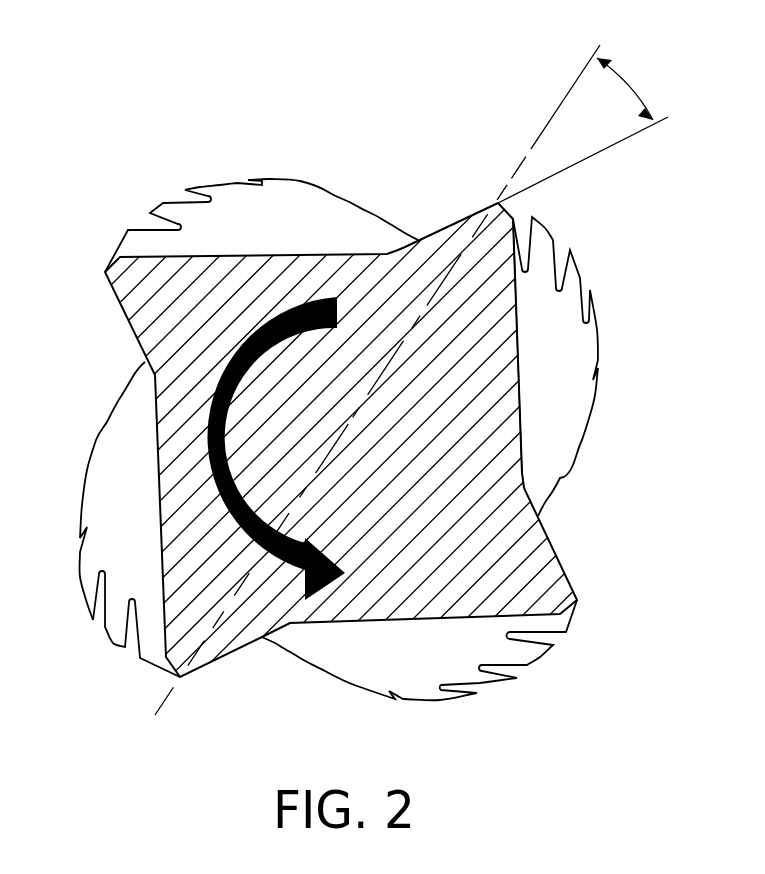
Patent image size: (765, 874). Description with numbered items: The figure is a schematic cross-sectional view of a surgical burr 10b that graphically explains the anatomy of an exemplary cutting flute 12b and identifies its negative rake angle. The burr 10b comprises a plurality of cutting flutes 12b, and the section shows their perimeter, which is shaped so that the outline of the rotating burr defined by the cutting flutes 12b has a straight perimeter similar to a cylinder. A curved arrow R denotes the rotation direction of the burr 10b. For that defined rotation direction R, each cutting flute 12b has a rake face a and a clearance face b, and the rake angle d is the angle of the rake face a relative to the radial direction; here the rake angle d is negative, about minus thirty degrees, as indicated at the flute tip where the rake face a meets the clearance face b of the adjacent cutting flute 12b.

The burr 10b is at (123, 153).
The cutting flute 12b is at (558, 397).
The rake face a is at (447, 214).
The clearance face b is at (531, 315).
The rake angle d is at (625, 89).
The rotation direction R is at (218, 384).